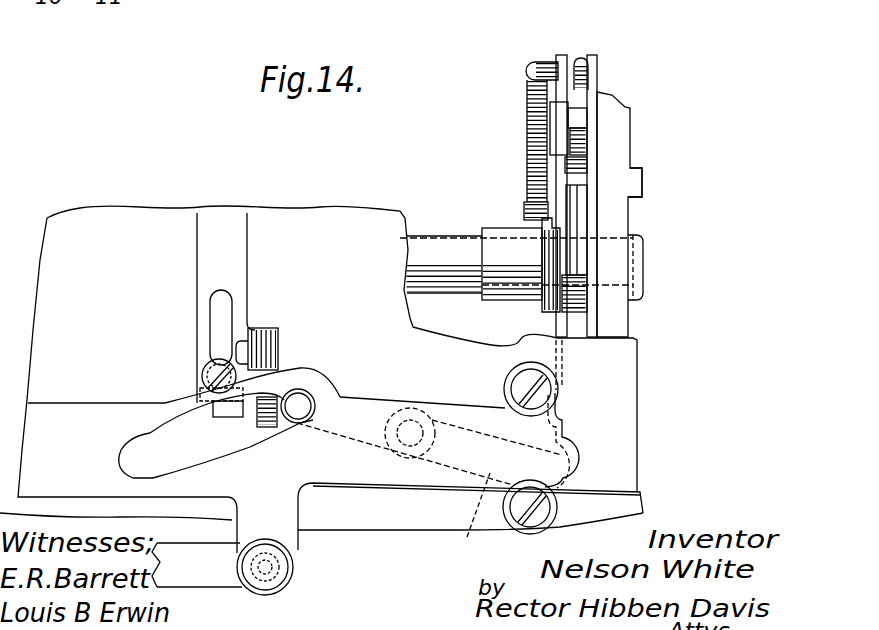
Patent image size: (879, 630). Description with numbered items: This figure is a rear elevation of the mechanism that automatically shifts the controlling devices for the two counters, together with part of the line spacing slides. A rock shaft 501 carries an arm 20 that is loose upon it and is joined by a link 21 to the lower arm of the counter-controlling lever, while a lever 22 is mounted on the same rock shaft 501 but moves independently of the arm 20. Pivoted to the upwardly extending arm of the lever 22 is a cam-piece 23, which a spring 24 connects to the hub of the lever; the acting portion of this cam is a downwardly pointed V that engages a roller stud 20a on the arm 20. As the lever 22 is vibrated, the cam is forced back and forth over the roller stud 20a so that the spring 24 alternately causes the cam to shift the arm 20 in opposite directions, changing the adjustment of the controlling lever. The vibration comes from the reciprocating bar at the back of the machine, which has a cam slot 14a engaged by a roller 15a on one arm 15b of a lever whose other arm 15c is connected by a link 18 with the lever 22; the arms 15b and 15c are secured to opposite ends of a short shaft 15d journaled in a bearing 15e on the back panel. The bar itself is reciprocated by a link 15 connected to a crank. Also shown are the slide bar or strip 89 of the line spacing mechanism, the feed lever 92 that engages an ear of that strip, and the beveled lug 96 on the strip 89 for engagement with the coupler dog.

The slide bar or strip 89 is at (240, 230).
The feed lever 92 is at (268, 332).
The beveled lug 96 is at (238, 418).
The cam slot 14a is at (287, 387).
The roller 15a is at (310, 390).
The lever arm 15b is at (383, 377).
The lever arm 15c is at (470, 518).
The short shaft 15d is at (420, 420).
The bearing 15e is at (437, 450).
The link 15 is at (222, 580).
The link 18 is at (562, 358).
The rock shaft 501 is at (430, 242).
The lever 22 is at (557, 235).
The cam-piece 23 is at (567, 52).
The link 21 is at (585, 55).
The arm 20 is at (595, 78).
The roller stud 20a is at (642, 180).
The spring 24 is at (528, 112).